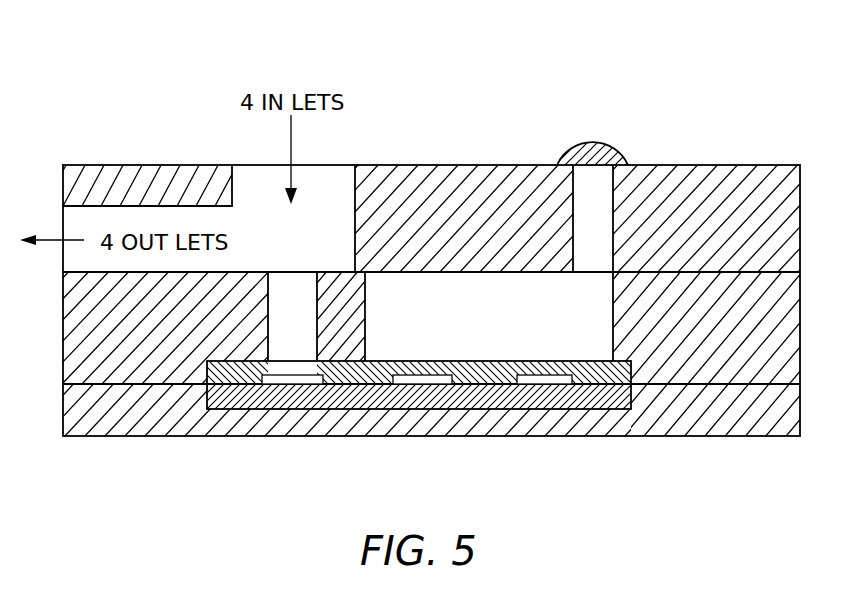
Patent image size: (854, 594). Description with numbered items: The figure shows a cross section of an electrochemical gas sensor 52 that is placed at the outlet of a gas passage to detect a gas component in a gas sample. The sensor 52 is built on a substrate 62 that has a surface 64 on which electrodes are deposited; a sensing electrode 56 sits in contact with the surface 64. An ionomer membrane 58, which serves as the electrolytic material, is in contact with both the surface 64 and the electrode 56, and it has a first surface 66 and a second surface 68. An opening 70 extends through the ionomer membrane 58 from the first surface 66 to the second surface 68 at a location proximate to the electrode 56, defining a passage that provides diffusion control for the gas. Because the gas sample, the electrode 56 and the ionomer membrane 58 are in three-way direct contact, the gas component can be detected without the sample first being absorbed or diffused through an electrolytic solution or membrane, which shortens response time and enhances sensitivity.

The electrochemical gas sensor 52 is at (487, 112).
The sensing electrode 56 is at (293, 387).
The ionomer membrane 58 is at (247, 378).
The substrate 62 is at (589, 402).
The surface 64 is at (491, 361).
The first surface 66 is at (423, 361).
The second surface 68 is at (207, 409).
The opening 70 is at (318, 375).